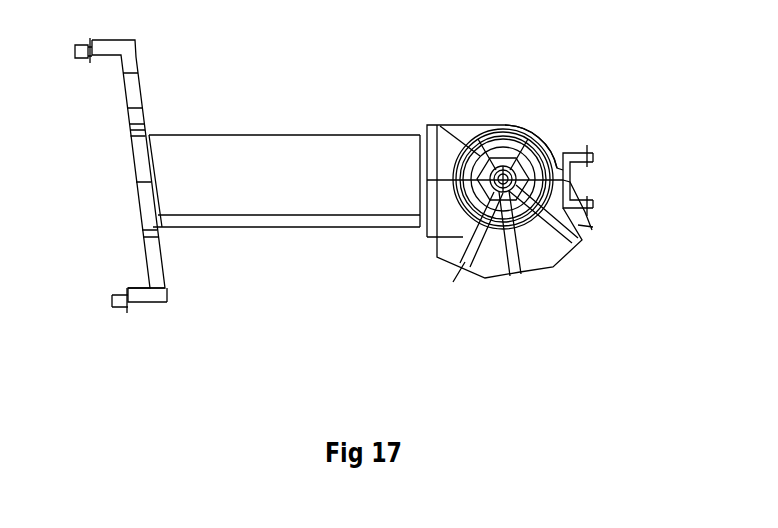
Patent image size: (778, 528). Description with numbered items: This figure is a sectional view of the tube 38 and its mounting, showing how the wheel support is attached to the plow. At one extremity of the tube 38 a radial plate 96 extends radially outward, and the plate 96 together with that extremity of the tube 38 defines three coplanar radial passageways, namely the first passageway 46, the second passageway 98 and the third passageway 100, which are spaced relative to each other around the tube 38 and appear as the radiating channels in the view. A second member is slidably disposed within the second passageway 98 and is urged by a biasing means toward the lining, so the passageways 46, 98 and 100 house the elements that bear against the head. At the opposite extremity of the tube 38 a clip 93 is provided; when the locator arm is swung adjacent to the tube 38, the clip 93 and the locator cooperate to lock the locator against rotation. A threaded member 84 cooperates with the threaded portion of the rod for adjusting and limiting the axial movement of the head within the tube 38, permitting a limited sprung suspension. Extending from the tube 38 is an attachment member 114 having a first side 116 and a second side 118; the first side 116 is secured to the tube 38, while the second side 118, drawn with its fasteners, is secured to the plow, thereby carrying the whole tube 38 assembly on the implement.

The tube 38 is at (478, 137).
The first radial passageway 46 is at (525, 260).
The threaded member 84 is at (553, 150).
The clip 93 is at (580, 163).
The radial plate 96 is at (593, 227).
The second radial passageway 98 is at (558, 231).
The third radial passageway 100 is at (468, 268).
The attachment member 114 is at (293, 203).
The first side 116 is at (430, 181).
The second side 118 is at (157, 262).